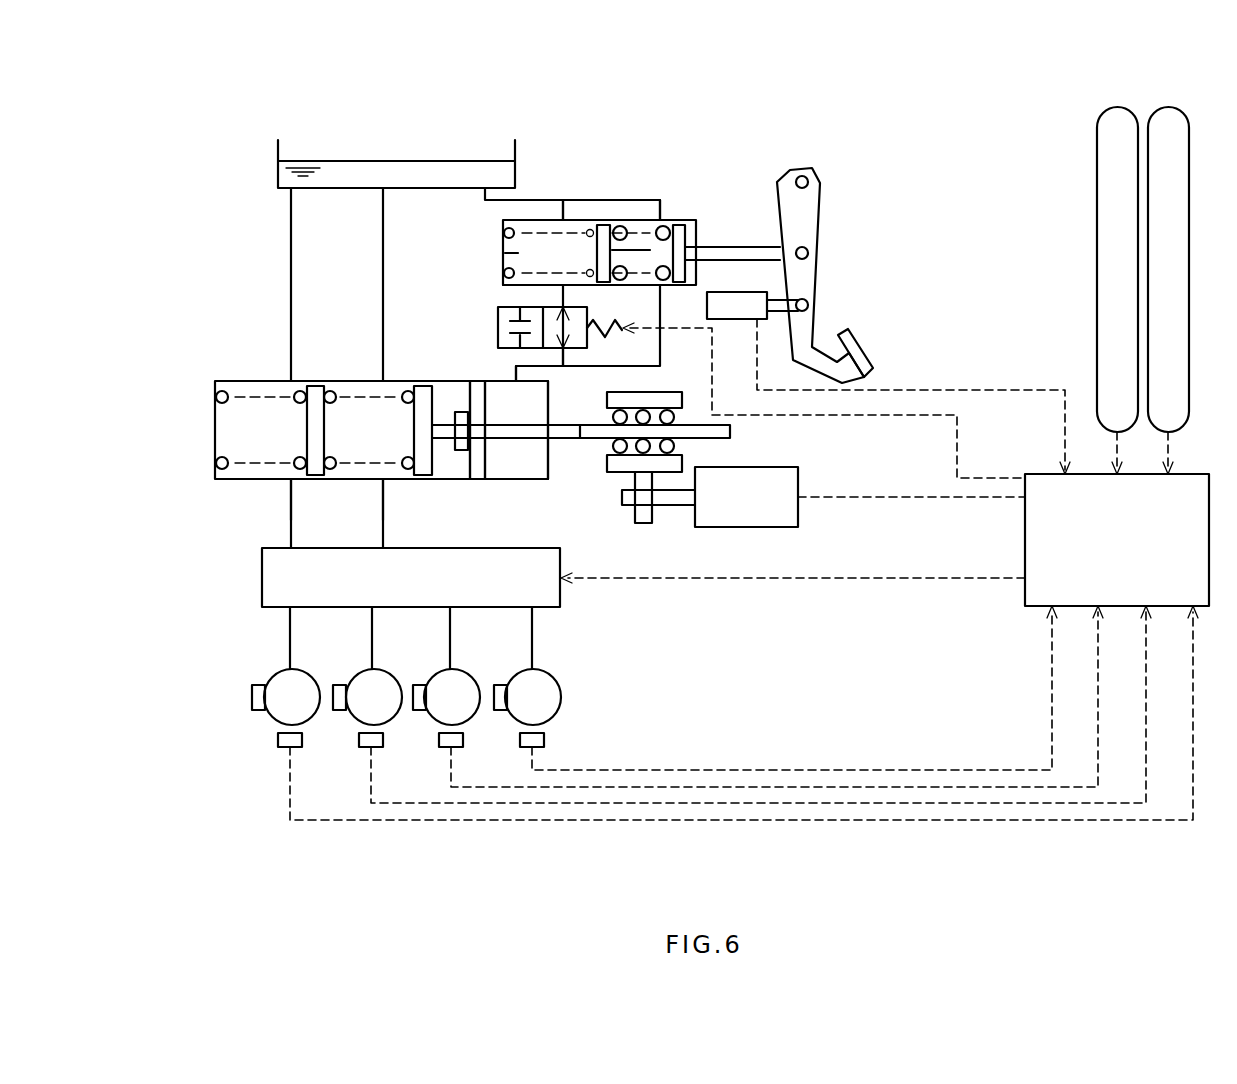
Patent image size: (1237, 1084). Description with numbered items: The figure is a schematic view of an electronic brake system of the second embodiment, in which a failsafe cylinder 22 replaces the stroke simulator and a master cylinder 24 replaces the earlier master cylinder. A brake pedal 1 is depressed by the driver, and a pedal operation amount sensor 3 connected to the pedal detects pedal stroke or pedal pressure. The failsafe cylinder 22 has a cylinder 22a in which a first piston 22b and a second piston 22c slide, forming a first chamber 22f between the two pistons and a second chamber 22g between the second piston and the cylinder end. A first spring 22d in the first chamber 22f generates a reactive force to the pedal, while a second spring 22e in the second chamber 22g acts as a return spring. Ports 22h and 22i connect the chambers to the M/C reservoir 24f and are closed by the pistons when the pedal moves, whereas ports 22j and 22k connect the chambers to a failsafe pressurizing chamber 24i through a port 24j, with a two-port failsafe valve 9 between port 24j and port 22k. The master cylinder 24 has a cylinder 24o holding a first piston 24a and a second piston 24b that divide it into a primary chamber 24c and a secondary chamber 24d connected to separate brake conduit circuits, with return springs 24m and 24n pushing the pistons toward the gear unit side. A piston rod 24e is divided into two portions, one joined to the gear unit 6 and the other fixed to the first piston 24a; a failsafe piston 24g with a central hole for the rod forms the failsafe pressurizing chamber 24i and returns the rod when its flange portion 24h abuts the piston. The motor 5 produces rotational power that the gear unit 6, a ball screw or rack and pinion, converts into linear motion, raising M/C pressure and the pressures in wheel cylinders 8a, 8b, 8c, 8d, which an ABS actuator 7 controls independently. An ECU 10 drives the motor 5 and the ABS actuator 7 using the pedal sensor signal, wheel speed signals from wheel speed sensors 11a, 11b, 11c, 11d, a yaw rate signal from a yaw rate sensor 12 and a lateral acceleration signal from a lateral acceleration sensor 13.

The brake pedal 1 is at (860, 350).
The pedal operation amount sensor 3 is at (733, 320).
The motor 5 is at (770, 467).
The gear unit 6 is at (607, 474).
The ABS actuator 7 is at (562, 600).
The wheel cylinder 8a is at (260, 683).
The wheel cylinder 8b is at (341, 683).
The wheel cylinder 8c is at (422, 683).
The wheel cylinder 8d is at (502, 683).
The failsafe valve 9 is at (497, 318).
The ECU 10 is at (1025, 602).
The wheel speed sensor 11a is at (278, 740).
The wheel speed sensor 11b is at (359, 740).
The wheel speed sensor 11c is at (439, 740).
The wheel speed sensor 11d is at (520, 740).
The yaw rate sensor 12 is at (1112, 107).
The lateral acceleration sensor 13 is at (1165, 107).
The failsafe cylinder 22 is at (695, 215).
The cylinder 22a is at (623, 220).
The first piston 22b is at (680, 223).
The second piston 22c is at (603, 224).
The first spring 22d is at (618, 228).
The second spring 22e is at (504, 232).
The first chamber 22f is at (641, 262).
The second chamber 22g is at (518, 253).
The port 22h is at (662, 218).
The port 22i is at (562, 218).
The port 22j is at (690, 297).
The port 22k is at (560, 286).
The master cylinder 24 is at (222, 380).
The first piston 24a is at (422, 383).
The second piston 24b is at (312, 383).
The primary chamber 24c is at (370, 438).
The secondary chamber 24d is at (260, 438).
The piston rod 24e is at (562, 423).
The M/C reservoir 24f is at (407, 160).
The failsafe piston 24g is at (477, 479).
The flange portion 24h is at (460, 450).
The failsafe pressurizing chamber 24i is at (510, 465).
The port 24j is at (515, 372).
The return spring 24m is at (407, 470).
The return spring 24n is at (298, 470).
The cylinder 24o is at (258, 380).